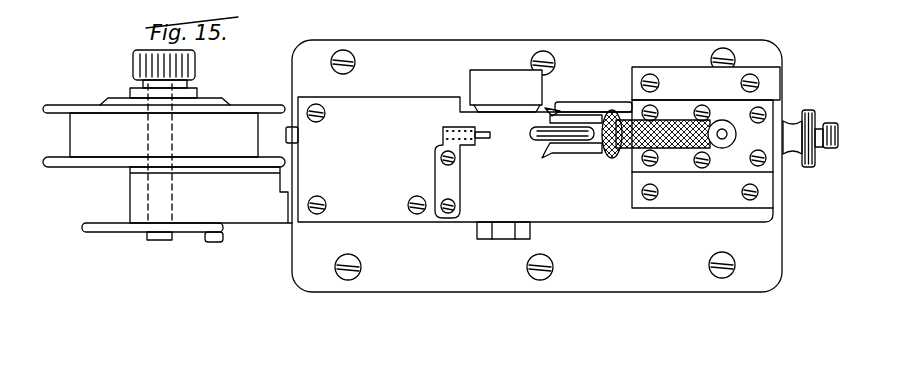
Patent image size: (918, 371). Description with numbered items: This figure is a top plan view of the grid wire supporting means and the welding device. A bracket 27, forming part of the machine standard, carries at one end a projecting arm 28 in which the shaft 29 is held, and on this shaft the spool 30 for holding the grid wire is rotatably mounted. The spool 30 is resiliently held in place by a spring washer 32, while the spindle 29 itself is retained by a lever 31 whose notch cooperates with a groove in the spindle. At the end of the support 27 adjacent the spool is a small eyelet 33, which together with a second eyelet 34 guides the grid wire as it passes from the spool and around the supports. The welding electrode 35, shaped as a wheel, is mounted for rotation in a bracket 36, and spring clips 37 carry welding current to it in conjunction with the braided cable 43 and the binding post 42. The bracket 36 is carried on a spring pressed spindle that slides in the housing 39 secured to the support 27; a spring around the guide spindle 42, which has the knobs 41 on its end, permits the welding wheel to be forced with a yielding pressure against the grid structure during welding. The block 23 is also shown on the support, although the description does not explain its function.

The block 23 is at (506, 91).
The bracket 27 is at (652, 281).
The arm 28 is at (257, 214).
The shaft 29 is at (162, 239).
The spool 30 is at (164, 153).
The lever 31 is at (105, 230).
The spring washer 32 is at (110, 94).
The eyelet 33 is at (300, 139).
The eyelet 34 is at (482, 146).
The welding electrode 35 is at (527, 142).
The bracket 36 is at (585, 150).
The spring clips 37 is at (568, 153).
The housing 39 is at (692, 168).
The knobs 41 is at (828, 151).
The binding post 42 is at (733, 154).
The braided cable 43 is at (673, 118).